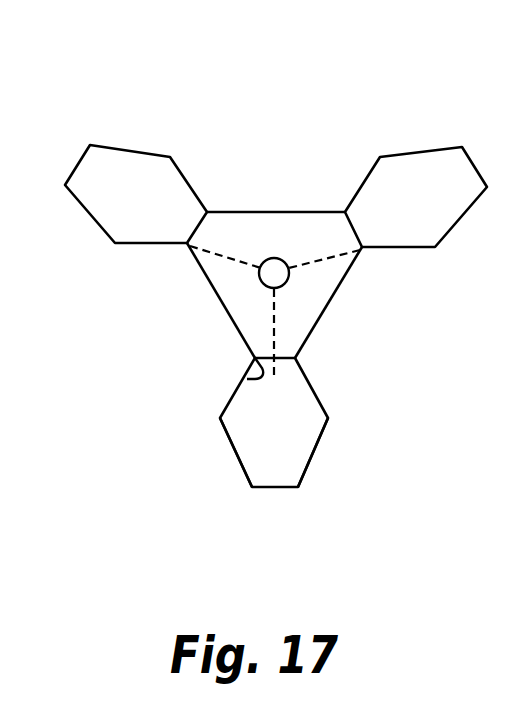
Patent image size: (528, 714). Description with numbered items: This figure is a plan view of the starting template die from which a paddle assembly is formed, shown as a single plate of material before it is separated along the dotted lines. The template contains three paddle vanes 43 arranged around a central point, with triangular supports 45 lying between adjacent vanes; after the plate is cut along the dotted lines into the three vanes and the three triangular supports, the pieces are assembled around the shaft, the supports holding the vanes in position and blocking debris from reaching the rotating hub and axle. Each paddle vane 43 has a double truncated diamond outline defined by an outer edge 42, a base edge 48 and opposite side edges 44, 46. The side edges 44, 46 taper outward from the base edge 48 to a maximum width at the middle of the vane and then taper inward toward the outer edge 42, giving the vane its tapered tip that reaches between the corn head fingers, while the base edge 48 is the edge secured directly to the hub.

The outer edge 42 is at (273, 488).
The paddle vane 43 is at (464, 150).
The side edge 44 is at (320, 443).
The triangular support 45 is at (322, 318).
The side edge 46 is at (235, 453).
The base edge 48 is at (242, 378).